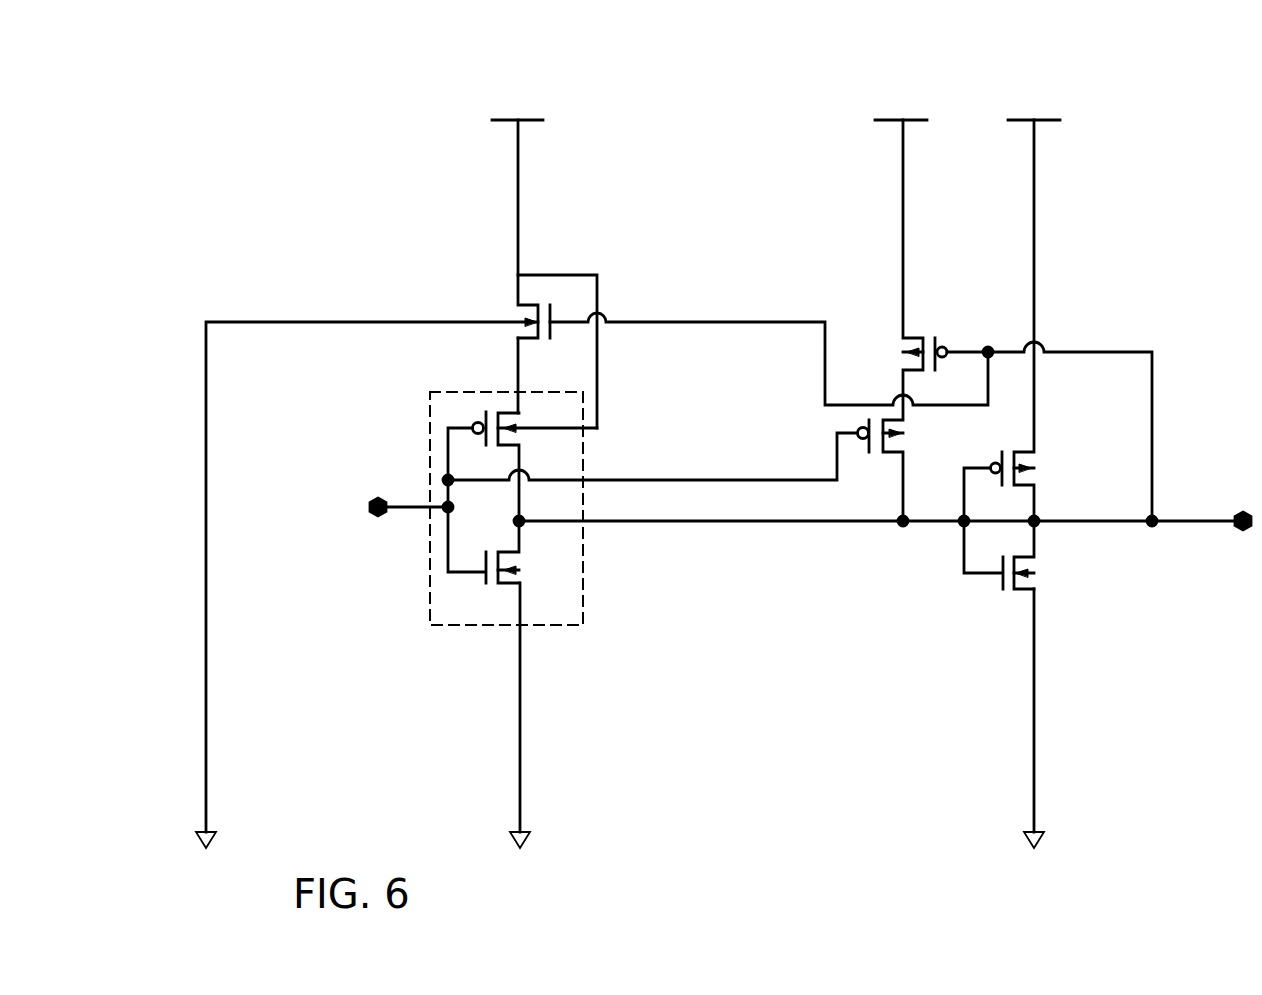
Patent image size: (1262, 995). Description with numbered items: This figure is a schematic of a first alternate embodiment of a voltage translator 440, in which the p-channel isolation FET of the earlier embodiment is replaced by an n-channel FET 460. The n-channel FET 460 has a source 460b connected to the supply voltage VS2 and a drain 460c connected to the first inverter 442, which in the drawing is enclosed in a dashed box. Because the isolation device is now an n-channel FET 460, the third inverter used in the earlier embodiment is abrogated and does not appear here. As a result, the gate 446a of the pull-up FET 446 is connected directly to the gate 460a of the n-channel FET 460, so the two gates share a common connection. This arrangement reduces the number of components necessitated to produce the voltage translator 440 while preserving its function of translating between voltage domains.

The voltage translator 440 is at (1133, 90).
The n-channel FET 460 is at (540, 256).
The gate of the n-channel FET 460a is at (695, 323).
The source of the n-channel FET 460b is at (516, 200).
The drain of the n-channel FET 460c is at (518, 378).
The first inverter 442 is at (584, 624).
The pull-up FET 446 is at (915, 331).
The gate of the pull-up FET 446a is at (950, 358).